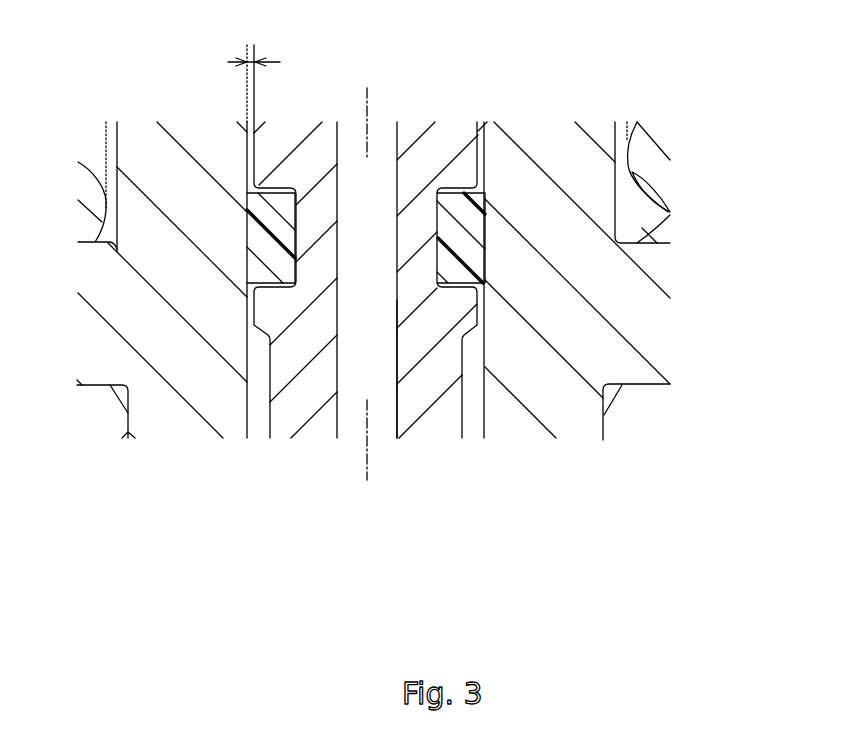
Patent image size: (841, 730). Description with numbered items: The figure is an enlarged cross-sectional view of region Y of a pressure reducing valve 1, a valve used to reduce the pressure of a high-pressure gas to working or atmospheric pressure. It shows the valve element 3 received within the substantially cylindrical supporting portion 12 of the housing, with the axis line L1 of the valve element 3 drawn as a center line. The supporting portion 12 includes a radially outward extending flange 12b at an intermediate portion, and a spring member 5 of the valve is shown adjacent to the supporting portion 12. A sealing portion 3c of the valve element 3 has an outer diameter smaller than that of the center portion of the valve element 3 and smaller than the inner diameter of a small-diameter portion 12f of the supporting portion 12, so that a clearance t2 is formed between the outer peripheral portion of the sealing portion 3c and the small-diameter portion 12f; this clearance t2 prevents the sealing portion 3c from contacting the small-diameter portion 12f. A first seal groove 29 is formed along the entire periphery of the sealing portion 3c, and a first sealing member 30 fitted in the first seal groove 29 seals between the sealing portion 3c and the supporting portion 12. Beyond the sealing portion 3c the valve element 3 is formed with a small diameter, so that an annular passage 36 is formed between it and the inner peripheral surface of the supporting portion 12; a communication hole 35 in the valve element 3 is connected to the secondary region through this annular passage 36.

The pressure reducing valve 1 is at (642, 100).
The valve element 3 is at (437, 133).
The sealing portion 3c is at (478, 160).
The spring member 5 is at (83, 225).
The supporting portion 12 is at (143, 133).
The flange 12b is at (95, 358).
The small-diameter portion 12f is at (238, 263).
The first seal groove 29 is at (455, 268).
The first sealing member 30 is at (468, 242).
The communication hole 35 is at (380, 355).
The annular passage 36 is at (258, 405).
The clearance t2 is at (272, 60).
The center axis L1 is at (366, 108).